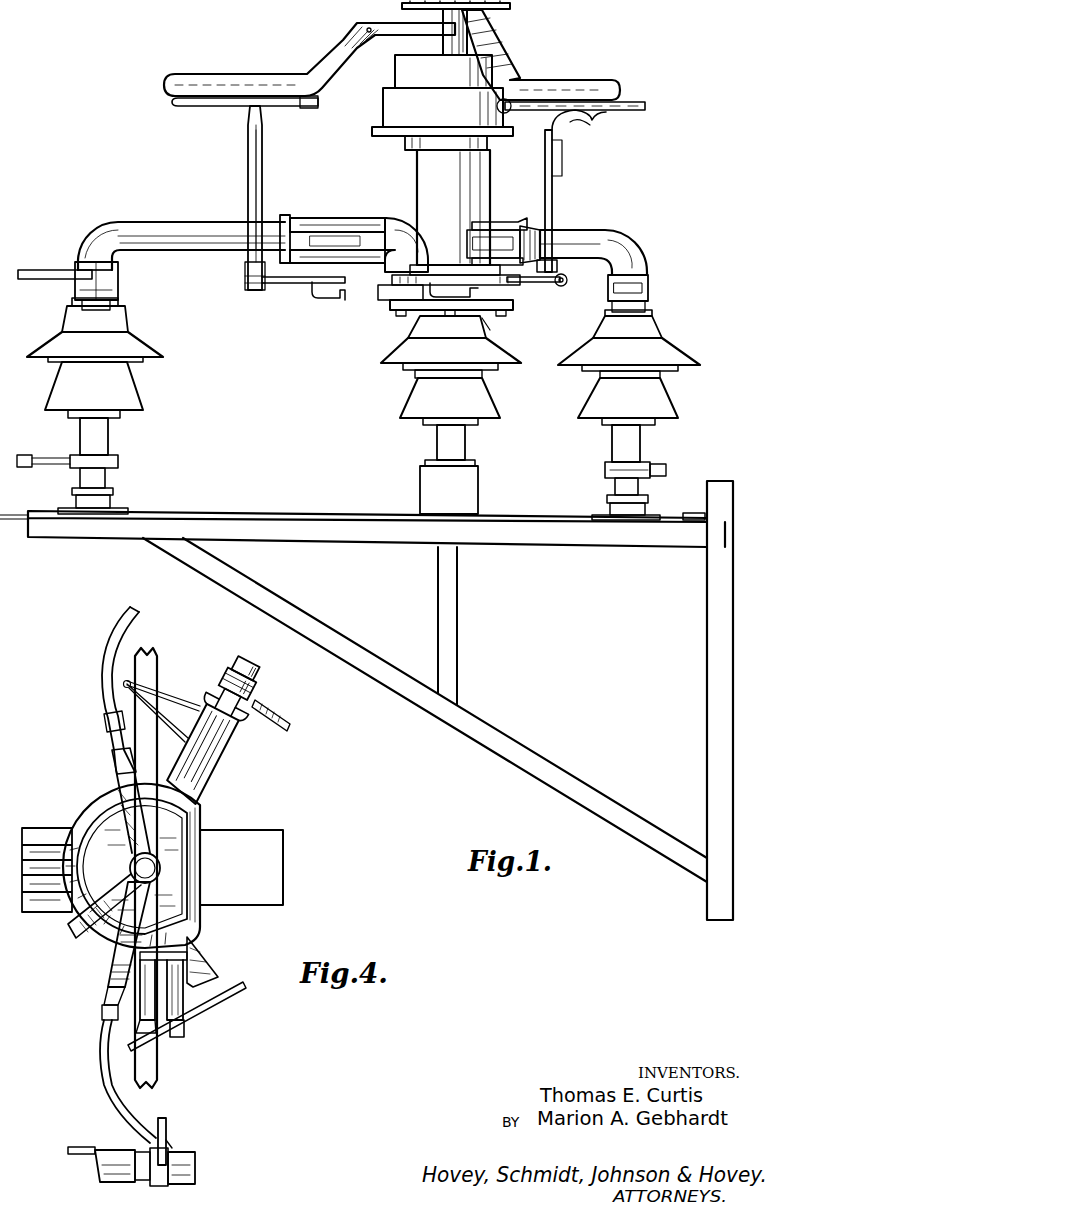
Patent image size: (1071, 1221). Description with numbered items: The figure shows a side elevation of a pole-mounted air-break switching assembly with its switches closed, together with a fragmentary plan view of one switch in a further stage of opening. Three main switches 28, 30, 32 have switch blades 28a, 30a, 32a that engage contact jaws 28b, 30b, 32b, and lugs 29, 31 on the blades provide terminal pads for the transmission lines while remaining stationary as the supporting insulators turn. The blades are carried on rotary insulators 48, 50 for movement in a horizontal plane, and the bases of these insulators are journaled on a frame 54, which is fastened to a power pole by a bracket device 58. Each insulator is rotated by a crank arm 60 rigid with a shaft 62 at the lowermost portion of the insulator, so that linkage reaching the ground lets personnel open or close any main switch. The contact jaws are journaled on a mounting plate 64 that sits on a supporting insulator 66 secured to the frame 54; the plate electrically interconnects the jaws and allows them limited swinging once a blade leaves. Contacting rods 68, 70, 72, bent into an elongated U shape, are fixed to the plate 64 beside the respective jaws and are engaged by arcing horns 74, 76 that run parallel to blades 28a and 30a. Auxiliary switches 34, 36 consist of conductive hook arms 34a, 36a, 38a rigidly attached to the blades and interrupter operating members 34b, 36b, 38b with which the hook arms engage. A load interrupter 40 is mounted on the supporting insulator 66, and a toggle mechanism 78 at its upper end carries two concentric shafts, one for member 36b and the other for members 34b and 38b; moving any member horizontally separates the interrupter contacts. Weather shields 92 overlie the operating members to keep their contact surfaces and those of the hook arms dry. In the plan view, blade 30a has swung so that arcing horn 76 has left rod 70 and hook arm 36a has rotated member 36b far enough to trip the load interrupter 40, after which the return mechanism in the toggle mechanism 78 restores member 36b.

In FIG. 1, the main switch 28 is at (148, 218).
In FIG. 1, the switch blade 28a is at (150, 253).
In FIG. 1, the contact jaw 28b is at (325, 215).
In FIG. 1, the lug 29 is at (38, 270).
In FIG. 1, the main switch 30 is at (598, 230).
In FIG. 1, the switch blade 30a is at (596, 268).
In FIG. 4, the switch blade 30a is at (195, 1166).
In FIG. 1, the contact jaw 30b is at (498, 220).
In FIG. 4, the contact jaw 30b is at (186, 1043).
In FIG. 1, the lug 31 is at (648, 292).
In FIG. 4, the main switch 32 is at (270, 684).
In FIG. 4, the switch blade 32a is at (248, 665).
In FIG. 4, the contact jaw 32b is at (214, 792).
In FIG. 1, the auxiliary switch 34 is at (246, 138).
In FIG. 1, the hook arm 34a is at (248, 179).
In FIG. 1, the interrupter operating member 34b is at (177, 104).
In FIG. 1, the auxiliary switch 36 is at (557, 183).
In FIG. 1, the hook arm 36a is at (595, 122).
In FIG. 4, the hook arm 36a is at (168, 1131).
In FIG. 1, the interrupter operating member 36b is at (640, 106).
In FIG. 4, the interrupter operating member 36b is at (104, 1091).
In FIG. 4, the hook arm 38a is at (290, 728).
In FIG. 4, the interrupter operating member 38b is at (110, 646).
In FIG. 1, the load interrupter 40 is at (457, 196).
In FIG. 1, the rotary insulator 48 is at (150, 350).
In FIG. 1, the rotary insulator 50 is at (684, 354).
In FIG. 1, the frame 54 is at (236, 512).
In FIG. 4, the frame 54 is at (286, 858).
In FIG. 1, the bracket device 58 is at (707, 636).
In FIG. 1, the crank arm 60 is at (45, 468).
In FIG. 1, the shaft 62 is at (110, 440).
In FIG. 1, the mounting plate 64 is at (404, 314).
In FIG. 1, the supporting insulator 66 is at (405, 397).
In FIG. 1, the contacting rod 68 is at (318, 298).
In FIG. 1, the contacting rod 70 is at (482, 318).
In FIG. 4, the contacting rod 70 is at (212, 1002).
In FIG. 4, the contacting rod 72 is at (180, 716).
In FIG. 1, the arcing horn 74 is at (275, 283).
In FIG. 1, the arcing horn 76 is at (560, 286).
In FIG. 4, the arcing horn 76 is at (80, 1147).
In FIG. 1, the toggle mechanism 78 is at (442, 116).
In FIG. 4, the toggle mechanism 78 is at (112, 854).
In FIG. 1, the weather shield 92 is at (232, 72).